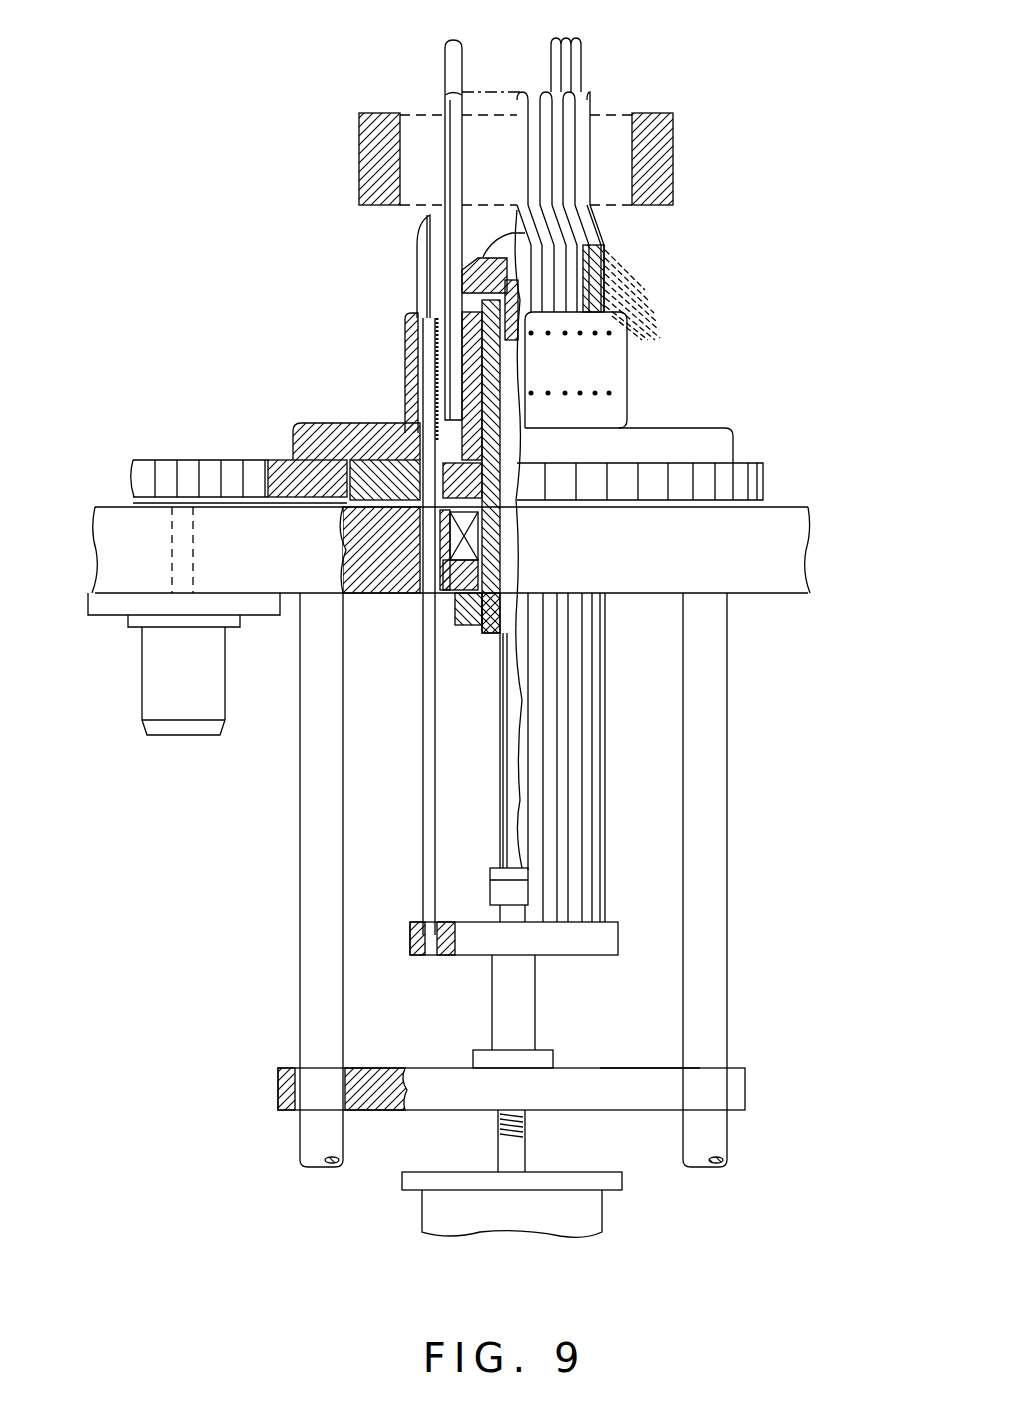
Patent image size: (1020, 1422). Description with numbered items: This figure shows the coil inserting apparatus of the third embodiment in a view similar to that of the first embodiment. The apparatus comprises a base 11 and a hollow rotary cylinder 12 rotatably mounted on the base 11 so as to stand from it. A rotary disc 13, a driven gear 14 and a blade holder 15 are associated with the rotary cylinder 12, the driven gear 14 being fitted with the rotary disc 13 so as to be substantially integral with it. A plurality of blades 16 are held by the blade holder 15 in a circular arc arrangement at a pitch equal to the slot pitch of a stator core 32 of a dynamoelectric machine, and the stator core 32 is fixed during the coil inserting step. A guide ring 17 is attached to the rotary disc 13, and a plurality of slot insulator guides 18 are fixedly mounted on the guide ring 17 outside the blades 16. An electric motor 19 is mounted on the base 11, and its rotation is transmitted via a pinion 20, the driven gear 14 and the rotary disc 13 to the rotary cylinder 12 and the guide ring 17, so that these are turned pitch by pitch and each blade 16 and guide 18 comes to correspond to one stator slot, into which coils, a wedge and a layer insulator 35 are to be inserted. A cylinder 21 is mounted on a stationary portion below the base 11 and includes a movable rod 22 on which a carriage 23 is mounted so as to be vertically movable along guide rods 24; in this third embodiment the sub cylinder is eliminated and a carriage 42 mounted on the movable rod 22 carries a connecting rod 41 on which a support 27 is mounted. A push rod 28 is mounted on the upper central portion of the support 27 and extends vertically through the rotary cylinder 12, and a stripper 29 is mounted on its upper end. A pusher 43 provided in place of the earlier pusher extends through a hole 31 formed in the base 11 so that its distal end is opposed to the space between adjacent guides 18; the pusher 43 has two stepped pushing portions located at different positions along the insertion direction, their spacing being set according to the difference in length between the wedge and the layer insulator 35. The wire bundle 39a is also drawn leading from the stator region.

The base 11 is at (812, 545).
The rotary cylinder 12 is at (490, 545).
The rotary disc 13 is at (368, 428).
The driven gear 14 is at (265, 460).
The blade holder 15 is at (485, 355).
The blades 16 is at (467, 58).
The guide ring 17 is at (404, 335).
The slot insulator guides 18 is at (423, 225).
The electric motor 19 is at (182, 735).
The pinion 20 is at (177, 460).
The cylinder 21 is at (604, 1212).
The movable rod 22 is at (525, 1147).
The carriage 23 is at (745, 1082).
The guide rods 24 is at (300, 950).
The support 27 is at (618, 935).
The push rod 28 is at (500, 745).
The stripper 29 is at (525, 233).
The holes 31 is at (445, 597).
The stator core 32 is at (675, 135).
The layer insulator 35 is at (432, 385).
The wire bundle 39a is at (650, 300).
The connecting rod 41 is at (492, 1015).
The carriage 42 is at (622, 1068).
The pusher 43 is at (423, 697).